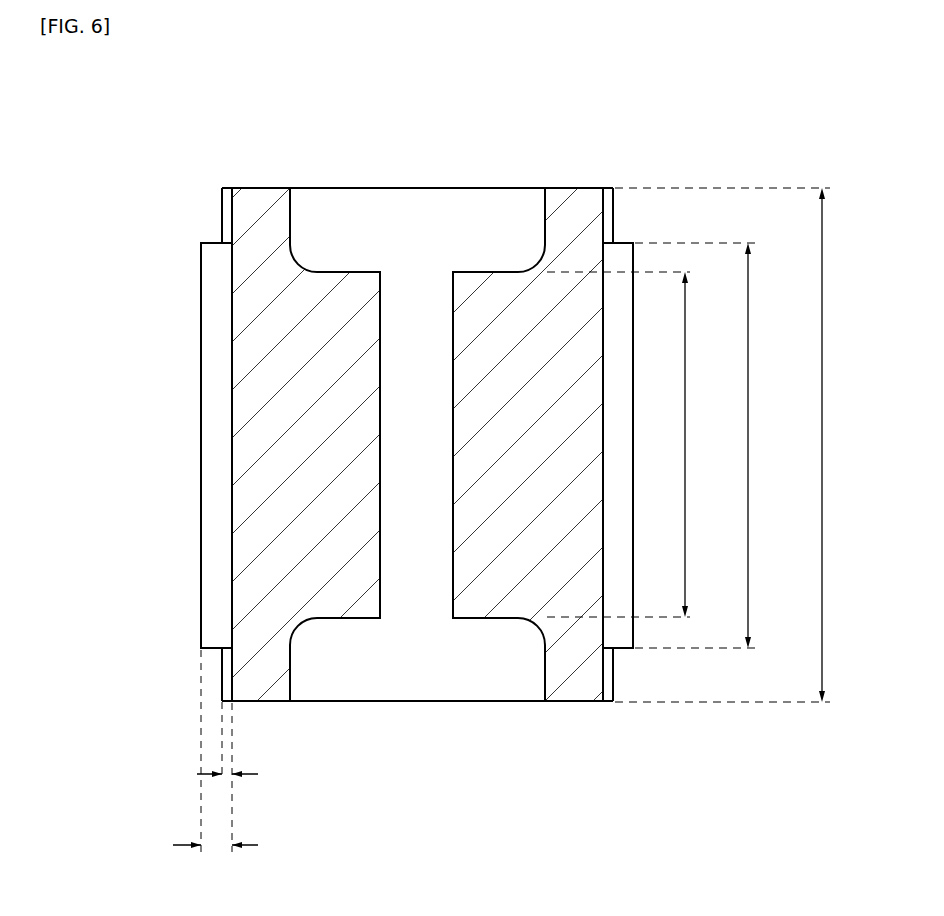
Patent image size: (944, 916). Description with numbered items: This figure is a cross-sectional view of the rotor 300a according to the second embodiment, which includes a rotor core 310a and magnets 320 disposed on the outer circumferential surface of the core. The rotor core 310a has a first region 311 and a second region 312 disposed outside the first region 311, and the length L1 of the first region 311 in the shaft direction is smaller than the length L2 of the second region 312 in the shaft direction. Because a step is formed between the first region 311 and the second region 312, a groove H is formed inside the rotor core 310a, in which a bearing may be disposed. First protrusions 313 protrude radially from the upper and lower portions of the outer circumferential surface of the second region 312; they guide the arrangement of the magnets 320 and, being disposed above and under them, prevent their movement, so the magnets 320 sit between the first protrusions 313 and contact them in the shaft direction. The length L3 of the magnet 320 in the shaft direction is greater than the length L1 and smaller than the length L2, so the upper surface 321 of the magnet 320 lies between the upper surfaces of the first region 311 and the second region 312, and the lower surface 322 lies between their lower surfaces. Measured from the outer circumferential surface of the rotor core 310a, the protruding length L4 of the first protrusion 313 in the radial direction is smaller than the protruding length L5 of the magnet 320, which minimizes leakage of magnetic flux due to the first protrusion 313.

The rotor 300a is at (119, 137).
The rotor core 310a is at (605, 752).
The first region 311 is at (472, 603).
The second region 312 is at (560, 668).
The first protrusion 313 is at (221, 199).
The magnet 320 is at (202, 592).
The upper surface of the magnet 321 is at (218, 242).
The lower surface of the magnet 322 is at (207, 661).
The groove H is at (325, 665).
The length of the first region in the shaft direction L1 is at (632, 444).
The length of the second region in the shaft direction L2 is at (735, 445).
The length of the magnet in the shaft direction L3 is at (707, 445).
The protruding length of the first protrusion L4 is at (224, 776).
The protruding length of the magnet L5 is at (215, 861).